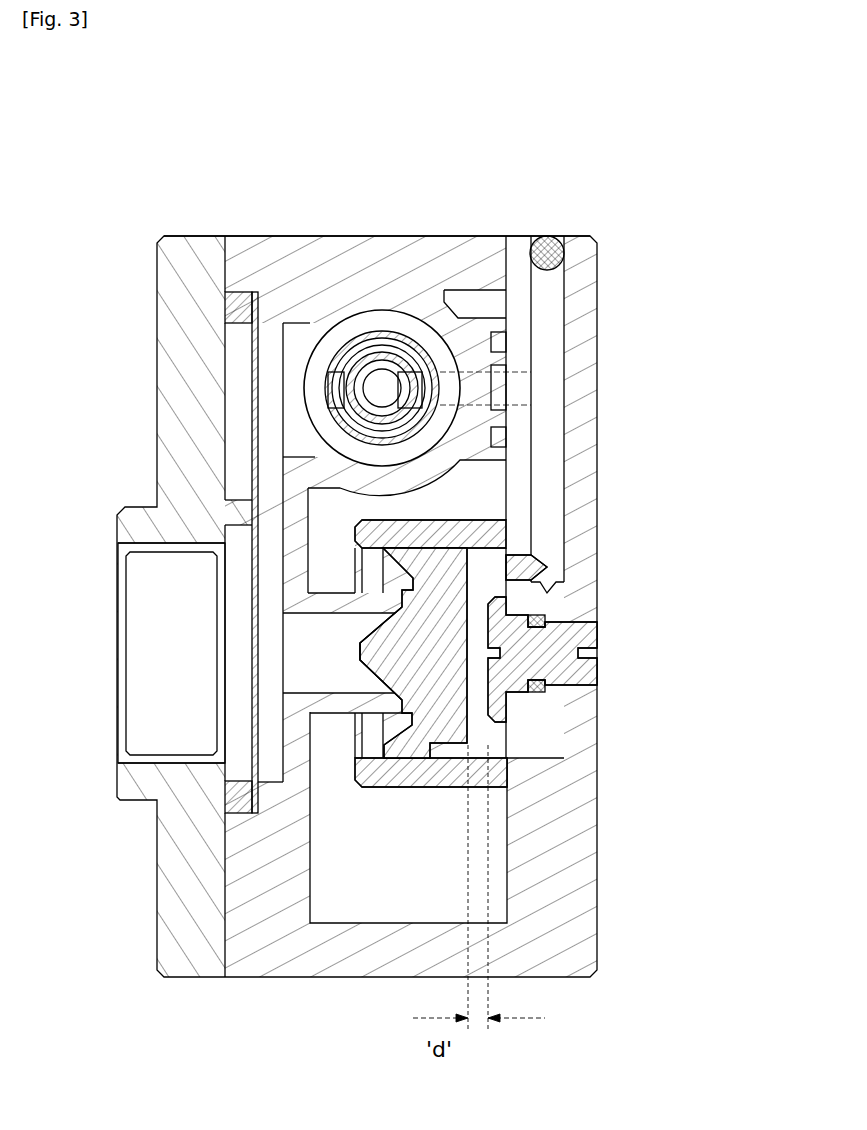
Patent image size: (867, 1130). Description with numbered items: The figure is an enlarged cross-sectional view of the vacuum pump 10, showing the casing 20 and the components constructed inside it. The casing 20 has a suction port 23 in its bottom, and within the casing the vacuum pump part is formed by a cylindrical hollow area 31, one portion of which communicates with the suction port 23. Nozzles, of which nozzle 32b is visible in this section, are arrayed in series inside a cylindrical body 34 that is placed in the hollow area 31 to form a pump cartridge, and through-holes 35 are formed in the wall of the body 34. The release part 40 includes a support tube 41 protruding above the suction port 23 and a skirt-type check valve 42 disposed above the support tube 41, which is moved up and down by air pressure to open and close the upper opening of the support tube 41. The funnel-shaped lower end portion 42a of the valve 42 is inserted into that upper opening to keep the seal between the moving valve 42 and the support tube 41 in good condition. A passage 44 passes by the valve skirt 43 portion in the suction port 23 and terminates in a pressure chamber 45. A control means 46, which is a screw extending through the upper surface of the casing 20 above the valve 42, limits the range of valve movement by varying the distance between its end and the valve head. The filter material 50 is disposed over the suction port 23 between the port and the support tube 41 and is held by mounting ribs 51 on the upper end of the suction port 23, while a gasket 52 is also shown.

The vacuum pump 10 is at (458, 156).
The casing 20 is at (134, 322).
The suction port 23 is at (180, 553).
The cylindrical hollow area 31 is at (308, 405).
The nozzle 32b is at (500, 345).
The cylindrical body 34 is at (498, 430).
The through-holes 35 is at (498, 374).
The release part 40 is at (395, 654).
The support tube 41 is at (455, 688).
The skirt-type check valve 42 is at (584, 636).
The lower end portion 42a is at (378, 628).
The valve skirt 43 is at (520, 556).
The passage 44 is at (560, 512).
The pressure chamber 45 is at (487, 512).
The control means 46 is at (557, 653).
The filter material 50 is at (252, 607).
The mounting ribs 51 is at (243, 497).
The gasket 52 is at (240, 775).